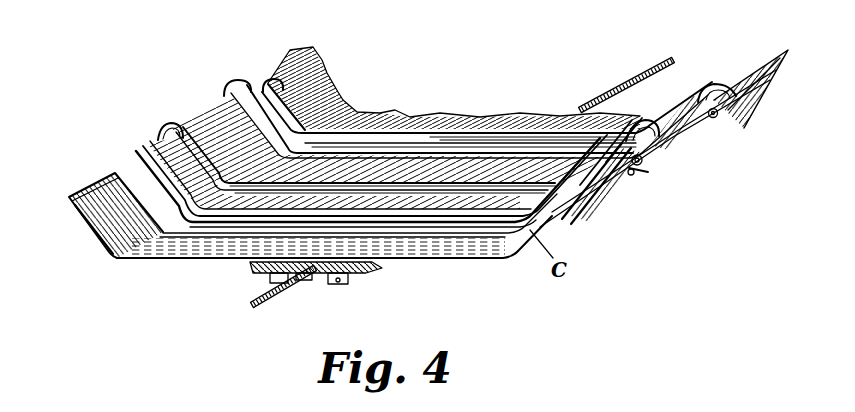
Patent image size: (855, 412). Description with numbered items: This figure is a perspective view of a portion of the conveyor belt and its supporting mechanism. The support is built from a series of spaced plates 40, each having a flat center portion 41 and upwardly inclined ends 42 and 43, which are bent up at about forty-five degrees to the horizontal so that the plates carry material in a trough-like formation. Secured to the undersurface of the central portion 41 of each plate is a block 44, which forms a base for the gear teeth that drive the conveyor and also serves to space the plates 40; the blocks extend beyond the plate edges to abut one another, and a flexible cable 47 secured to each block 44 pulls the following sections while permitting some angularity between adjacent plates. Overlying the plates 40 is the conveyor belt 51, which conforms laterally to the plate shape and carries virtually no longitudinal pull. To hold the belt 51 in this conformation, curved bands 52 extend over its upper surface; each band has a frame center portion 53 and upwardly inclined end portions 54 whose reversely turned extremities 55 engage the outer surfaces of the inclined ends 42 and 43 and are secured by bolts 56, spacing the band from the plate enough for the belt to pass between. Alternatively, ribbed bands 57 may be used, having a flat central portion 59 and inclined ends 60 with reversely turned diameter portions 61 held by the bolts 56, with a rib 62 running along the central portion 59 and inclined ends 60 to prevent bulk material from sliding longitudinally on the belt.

The spaced plates 40 is at (258, 218).
The flat center portion 41 is at (445, 242).
The upwardly inclined end 42 is at (100, 219).
The upwardly inclined end 43 is at (678, 152).
The block 44 is at (358, 272).
The cable 47 is at (288, 290).
The conveyor belt 51 is at (327, 90).
The curved bands 52 is at (185, 138).
The frame center portion 53 is at (450, 190).
The upwardly inclined end portions 54 is at (165, 128).
The reversely turned extremities 55 is at (643, 170).
The bolts 56 is at (716, 117).
The ribbed bands 57 is at (393, 132).
The flat central portion 59 is at (500, 147).
The inclined ends 60 is at (259, 94).
The reversely turned diameter portions 61 is at (728, 102).
The rib 62 is at (535, 135).